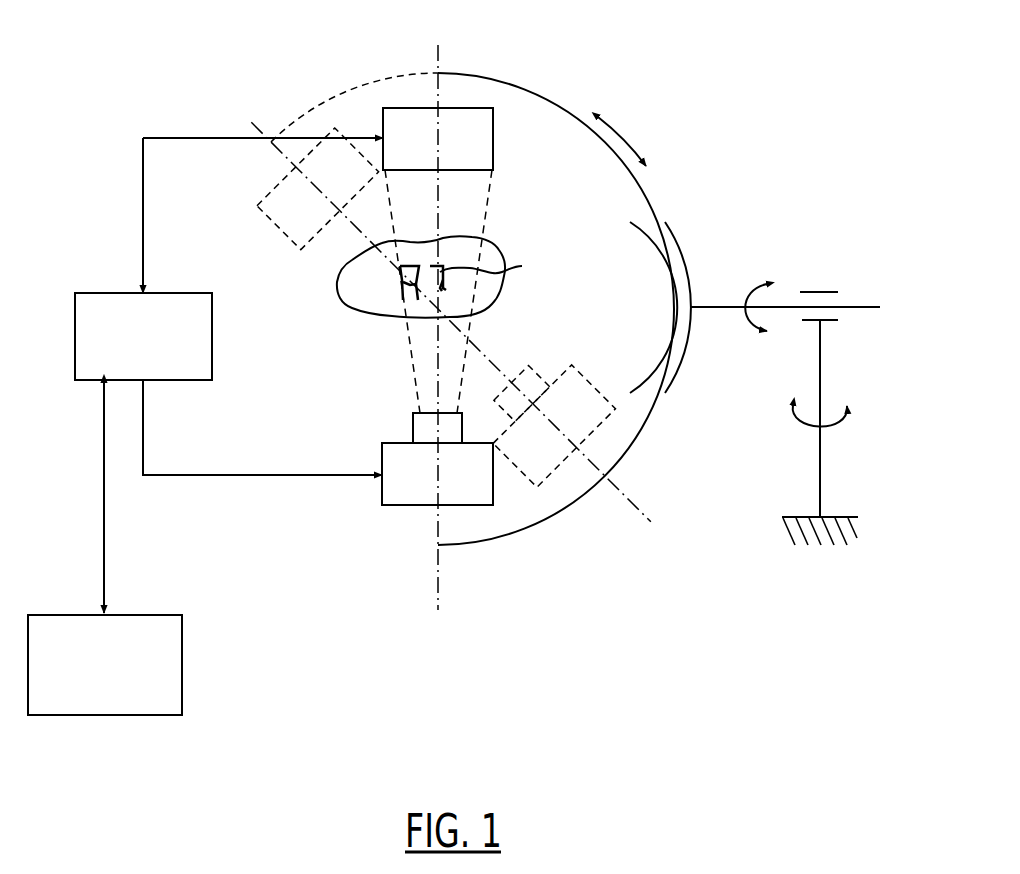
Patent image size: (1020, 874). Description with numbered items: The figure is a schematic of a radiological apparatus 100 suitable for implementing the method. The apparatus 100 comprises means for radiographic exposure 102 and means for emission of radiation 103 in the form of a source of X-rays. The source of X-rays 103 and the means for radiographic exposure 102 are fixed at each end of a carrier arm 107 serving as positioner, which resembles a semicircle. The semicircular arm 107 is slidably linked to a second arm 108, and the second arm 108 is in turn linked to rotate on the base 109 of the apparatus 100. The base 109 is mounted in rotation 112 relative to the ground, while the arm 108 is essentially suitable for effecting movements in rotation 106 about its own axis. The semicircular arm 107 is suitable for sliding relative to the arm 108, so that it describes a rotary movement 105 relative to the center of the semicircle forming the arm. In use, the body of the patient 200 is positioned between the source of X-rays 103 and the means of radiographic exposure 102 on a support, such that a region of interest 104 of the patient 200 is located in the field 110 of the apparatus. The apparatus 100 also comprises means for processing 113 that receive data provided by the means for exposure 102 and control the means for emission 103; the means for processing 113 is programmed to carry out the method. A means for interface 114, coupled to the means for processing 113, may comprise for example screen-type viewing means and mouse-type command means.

The radiological apparatus 100 is at (740, 112).
The means for radiographic exposure 102 is at (472, 120).
The means for emission of radiation 103 is at (387, 482).
The region of interest 104 is at (502, 272).
The rotation direction of the gantry 105 is at (624, 136).
The rotation 106 is at (768, 280).
The carrier arm 107 is at (641, 428).
The second arm 108 is at (789, 306).
The base 109 is at (822, 360).
The field 110 is at (487, 207).
The rotation 112 is at (847, 416).
The means for processing 113 is at (100, 310).
The means for interface 114 is at (157, 680).
The patient 200 is at (490, 293).